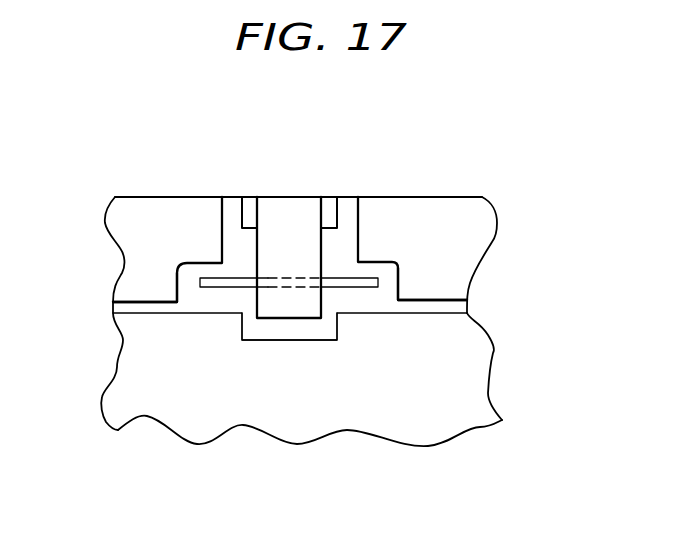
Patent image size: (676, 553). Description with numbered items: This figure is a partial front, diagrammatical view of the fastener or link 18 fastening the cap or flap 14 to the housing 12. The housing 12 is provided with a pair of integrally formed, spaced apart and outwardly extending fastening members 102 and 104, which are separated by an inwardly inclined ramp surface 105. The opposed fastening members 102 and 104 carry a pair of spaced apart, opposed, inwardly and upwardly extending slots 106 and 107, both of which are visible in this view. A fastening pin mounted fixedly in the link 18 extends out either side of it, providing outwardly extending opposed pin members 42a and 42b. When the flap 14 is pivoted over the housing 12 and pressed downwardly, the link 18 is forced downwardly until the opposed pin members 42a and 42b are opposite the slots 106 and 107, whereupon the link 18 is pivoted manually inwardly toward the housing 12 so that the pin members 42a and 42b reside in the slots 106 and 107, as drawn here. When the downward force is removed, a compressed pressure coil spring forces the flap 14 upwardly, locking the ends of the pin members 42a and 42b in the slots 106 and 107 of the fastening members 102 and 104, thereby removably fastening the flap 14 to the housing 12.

The housing 12 is at (493, 353).
The flap 14 is at (493, 240).
The fastener or link 18 is at (291, 210).
The pin member 42a is at (352, 287).
The pin member 42b is at (222, 287).
The fastening member 102 is at (418, 210).
The fastening member 104 is at (163, 210).
The inwardly inclined ramp surface 105 is at (275, 340).
The slot 106 is at (395, 268).
The slot 107 is at (200, 265).